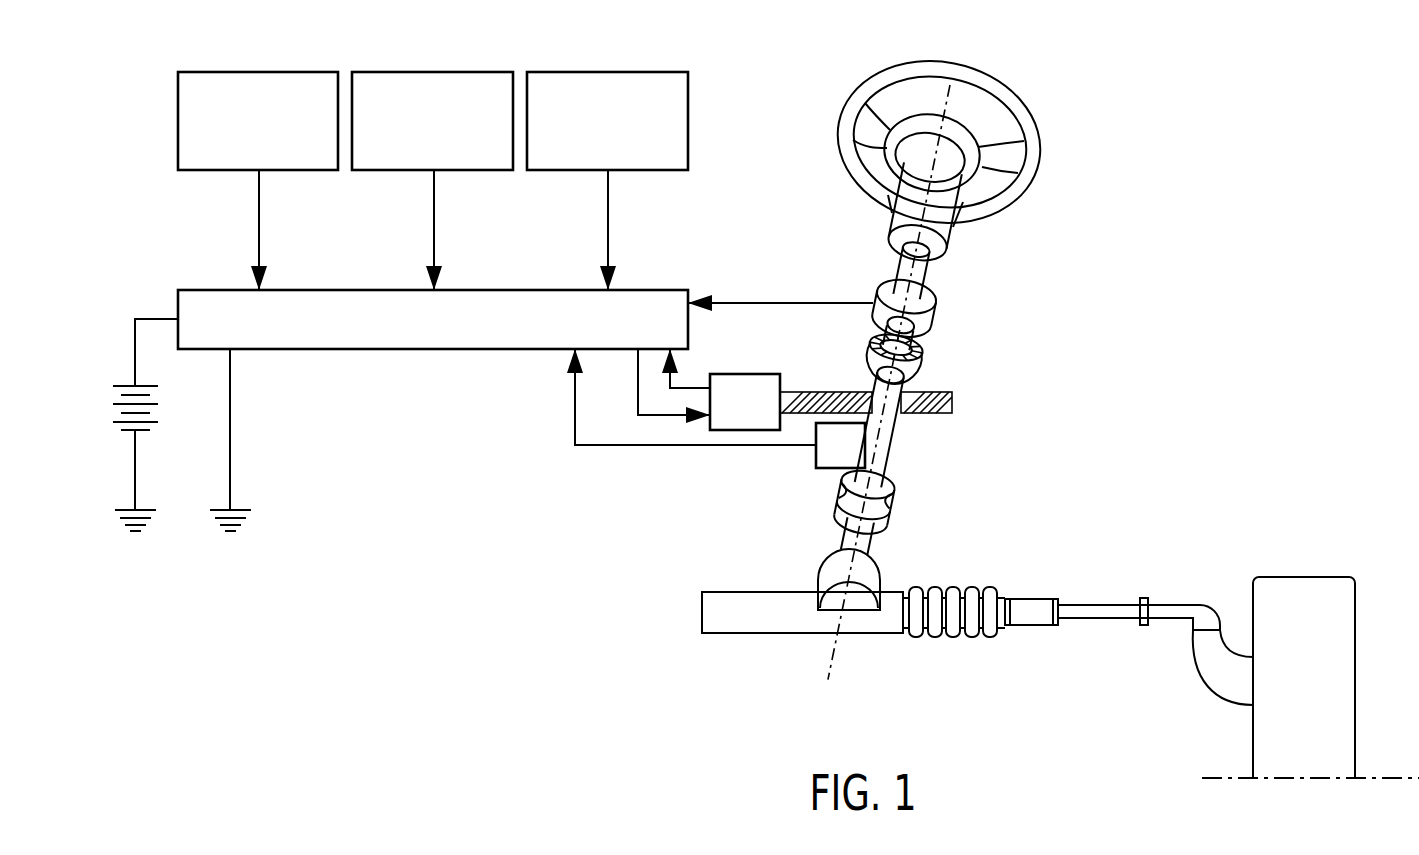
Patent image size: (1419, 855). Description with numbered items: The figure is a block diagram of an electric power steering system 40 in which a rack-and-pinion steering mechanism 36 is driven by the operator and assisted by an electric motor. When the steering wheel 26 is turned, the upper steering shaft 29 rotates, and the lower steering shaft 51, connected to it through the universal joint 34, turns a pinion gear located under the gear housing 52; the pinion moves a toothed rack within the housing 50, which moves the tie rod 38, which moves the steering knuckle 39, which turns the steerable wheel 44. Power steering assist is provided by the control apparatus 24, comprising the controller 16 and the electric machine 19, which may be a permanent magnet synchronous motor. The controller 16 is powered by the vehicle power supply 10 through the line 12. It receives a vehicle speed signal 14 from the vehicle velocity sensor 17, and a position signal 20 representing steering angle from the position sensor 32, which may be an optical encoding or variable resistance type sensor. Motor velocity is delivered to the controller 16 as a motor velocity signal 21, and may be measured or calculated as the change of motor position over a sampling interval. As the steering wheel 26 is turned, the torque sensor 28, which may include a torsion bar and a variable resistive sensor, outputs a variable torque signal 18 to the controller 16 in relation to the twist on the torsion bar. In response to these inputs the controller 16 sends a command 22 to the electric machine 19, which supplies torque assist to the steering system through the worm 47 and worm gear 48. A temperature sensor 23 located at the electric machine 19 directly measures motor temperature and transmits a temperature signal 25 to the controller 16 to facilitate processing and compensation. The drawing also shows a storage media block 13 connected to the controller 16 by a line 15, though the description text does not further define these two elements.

The vehicle power supply 10 is at (122, 412).
The line 12 is at (150, 318).
The storage media 13 is at (258, 72).
The vehicle speed signal 14 is at (434, 206).
The storage media signal line 15 is at (259, 206).
The controller 16 is at (400, 350).
The vehicle velocity sensor 17 is at (432, 72).
The torque signal 18 is at (792, 300).
The electric machine 19 is at (755, 374).
The position signal 20 is at (703, 447).
The motor velocity signal 21 is at (697, 388).
The command 22 is at (652, 417).
The temperature sensor 23 is at (607, 72).
The control apparatus 24 is at (1127, 292).
The temperature signal 25 is at (608, 206).
The steering wheel 26 is at (993, 92).
The torque sensor 28 is at (931, 309).
The upper steering shaft 29 is at (915, 204).
The position sensor 32 is at (815, 458).
The universal joint 34 is at (894, 496).
The steering mechanism 36 is at (975, 585).
The tie rod 38 is at (1096, 612).
The steering knuckle 39 is at (1220, 665).
The electric power steering system 40 is at (1207, 395).
The steerable wheel 44 is at (1290, 590).
The worm 47 is at (940, 405).
The worm gear 48 is at (908, 405).
The housing 50 is at (740, 635).
The lower steering shaft 51 is at (887, 532).
The gear housing 52 is at (826, 572).